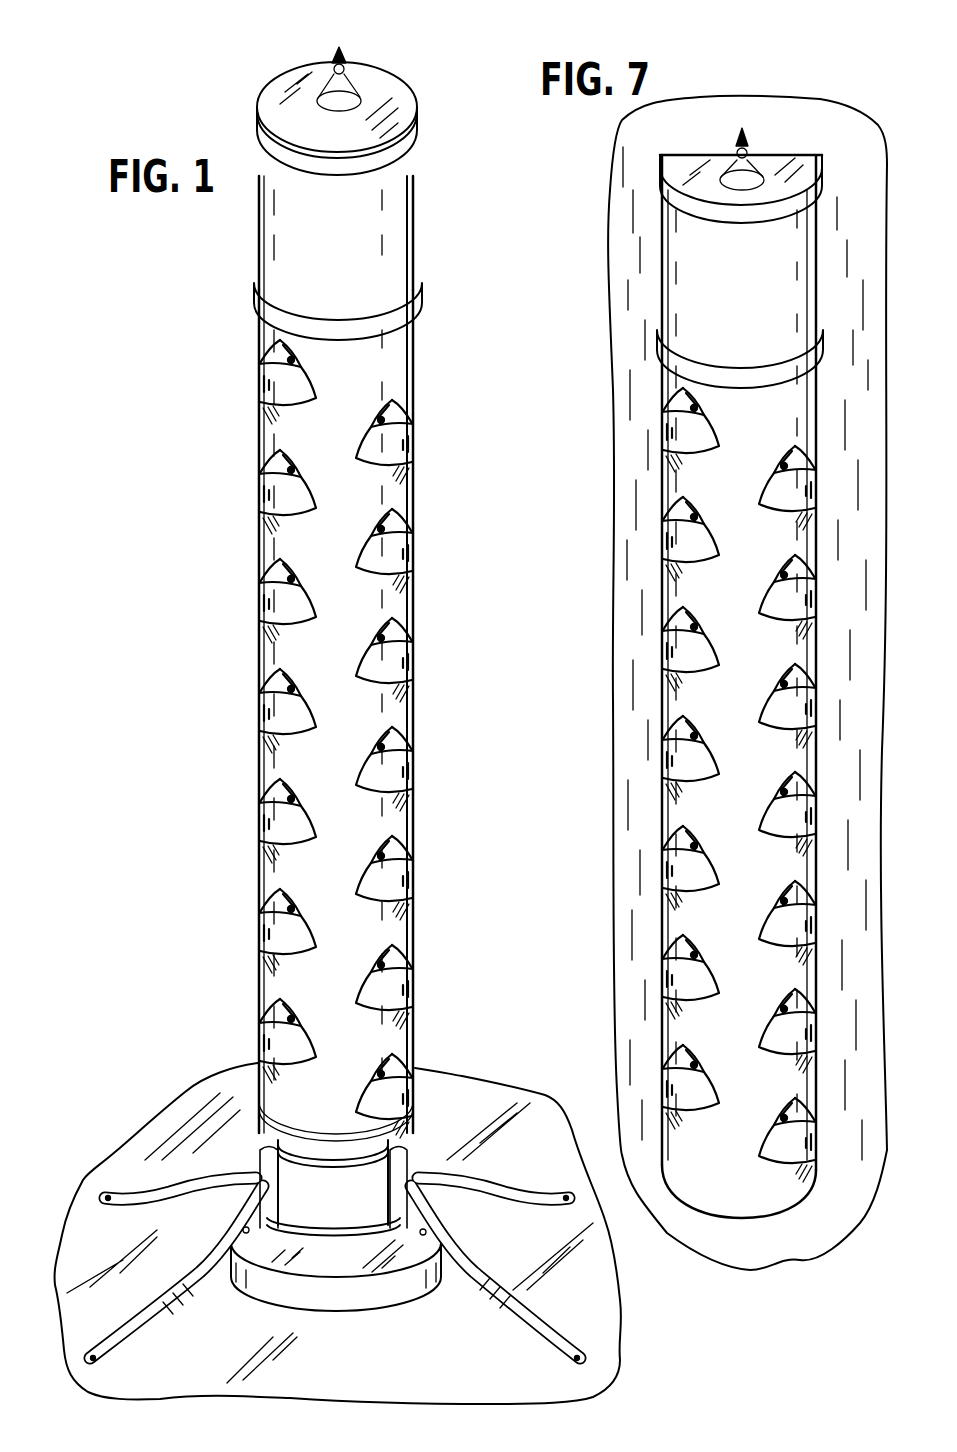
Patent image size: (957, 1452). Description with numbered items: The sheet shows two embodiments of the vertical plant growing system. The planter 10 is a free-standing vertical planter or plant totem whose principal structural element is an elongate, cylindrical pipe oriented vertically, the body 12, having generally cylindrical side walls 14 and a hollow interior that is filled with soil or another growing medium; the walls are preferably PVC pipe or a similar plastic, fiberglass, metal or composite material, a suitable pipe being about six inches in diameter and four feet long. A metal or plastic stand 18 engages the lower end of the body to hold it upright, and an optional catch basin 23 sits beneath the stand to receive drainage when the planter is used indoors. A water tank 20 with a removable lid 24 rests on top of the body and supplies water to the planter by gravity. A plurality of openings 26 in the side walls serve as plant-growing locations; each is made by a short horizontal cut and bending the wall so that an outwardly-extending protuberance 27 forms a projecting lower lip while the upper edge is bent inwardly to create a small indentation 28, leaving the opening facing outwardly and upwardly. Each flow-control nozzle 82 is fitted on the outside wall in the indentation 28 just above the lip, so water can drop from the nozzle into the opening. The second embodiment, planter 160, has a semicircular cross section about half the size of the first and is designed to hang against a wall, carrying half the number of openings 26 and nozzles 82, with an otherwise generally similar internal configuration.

In FIG. 1, the planter 10 is at (212, 390).
In FIG. 1, the body 12 is at (256, 518).
In FIG. 1, the side walls 14 is at (260, 440).
In FIG. 1, the stand 18 is at (205, 1178).
In FIG. 1, the water tank 20 is at (272, 226).
In FIG. 1, the catch basin 23 is at (337, 1300).
In FIG. 1, the removable lid 24 is at (380, 82).
In FIG. 1, the openings 26 is at (259, 798).
In FIG. 7, the openings 26 is at (817, 577).
In FIG. 1, the protuberance 27 is at (259, 529).
In FIG. 1, the indentation 28 is at (285, 467).
In FIG. 1, the flow-control nozzle 82 is at (267, 566).
In FIG. 7, the flow-control nozzle 82 is at (795, 672).
In FIG. 7, the planter 160 is at (657, 325).